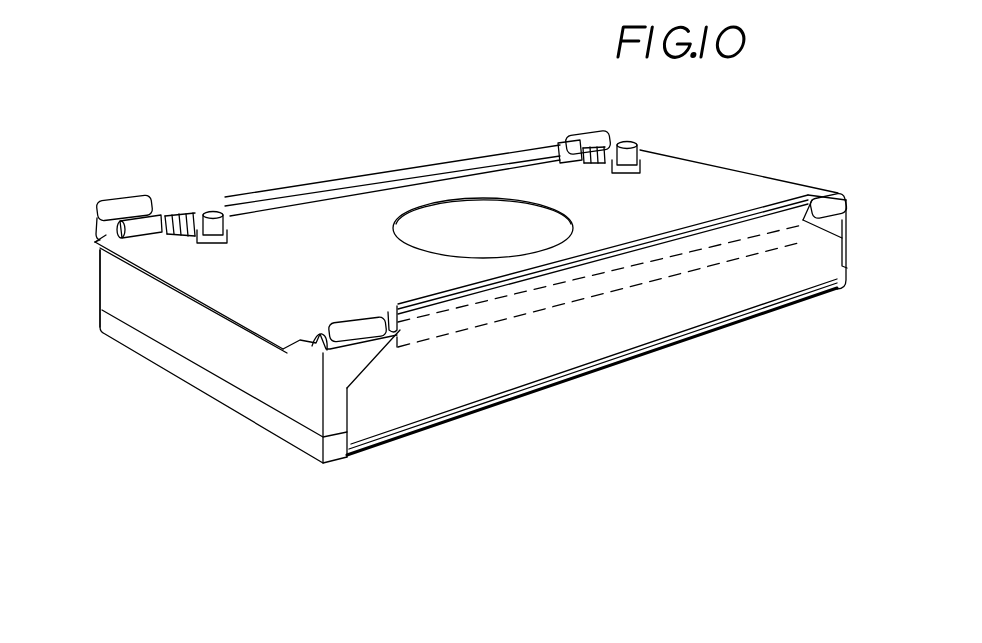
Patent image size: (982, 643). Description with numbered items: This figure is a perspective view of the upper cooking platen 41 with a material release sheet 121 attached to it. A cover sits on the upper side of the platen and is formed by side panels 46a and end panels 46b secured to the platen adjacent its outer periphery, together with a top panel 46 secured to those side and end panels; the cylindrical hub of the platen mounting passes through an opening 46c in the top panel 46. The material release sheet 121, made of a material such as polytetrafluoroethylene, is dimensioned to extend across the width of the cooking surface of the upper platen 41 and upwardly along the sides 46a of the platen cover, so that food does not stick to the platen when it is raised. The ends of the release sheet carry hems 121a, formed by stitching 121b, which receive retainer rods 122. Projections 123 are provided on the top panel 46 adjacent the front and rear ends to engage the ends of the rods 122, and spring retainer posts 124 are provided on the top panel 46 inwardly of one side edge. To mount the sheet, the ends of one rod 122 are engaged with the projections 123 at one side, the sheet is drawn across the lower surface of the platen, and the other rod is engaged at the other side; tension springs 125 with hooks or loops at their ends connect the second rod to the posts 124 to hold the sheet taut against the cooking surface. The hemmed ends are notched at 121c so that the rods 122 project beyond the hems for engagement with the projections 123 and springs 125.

The upper cooking platen 41 is at (250, 421).
The top panel 46 is at (288, 285).
The side panels 46a is at (337, 398).
The end panels 46b is at (193, 340).
The opening 46c is at (393, 230).
The material release sheet 121 is at (377, 448).
The hems 121a is at (399, 312).
The stitching 121b is at (510, 298).
The notches 121c is at (370, 368).
The retainer rods 122 is at (137, 236).
The projections 123 is at (118, 198).
The spring retainer posts 124 is at (224, 223).
The tension springs 125 is at (188, 214).